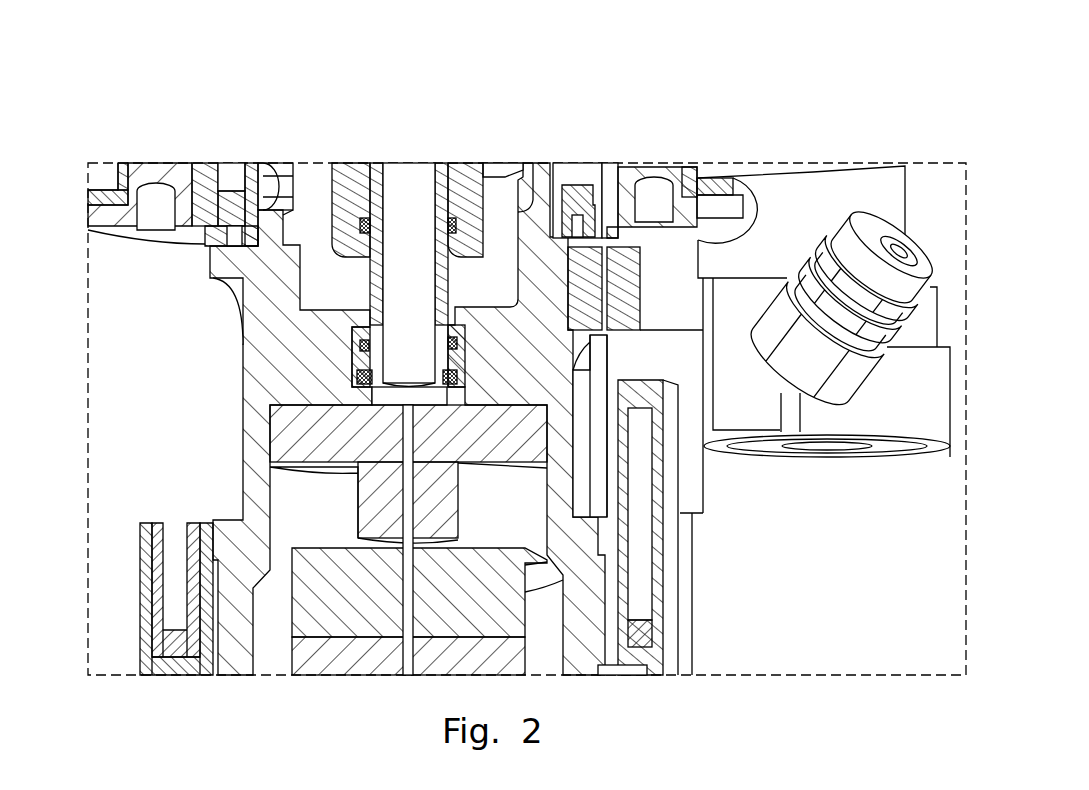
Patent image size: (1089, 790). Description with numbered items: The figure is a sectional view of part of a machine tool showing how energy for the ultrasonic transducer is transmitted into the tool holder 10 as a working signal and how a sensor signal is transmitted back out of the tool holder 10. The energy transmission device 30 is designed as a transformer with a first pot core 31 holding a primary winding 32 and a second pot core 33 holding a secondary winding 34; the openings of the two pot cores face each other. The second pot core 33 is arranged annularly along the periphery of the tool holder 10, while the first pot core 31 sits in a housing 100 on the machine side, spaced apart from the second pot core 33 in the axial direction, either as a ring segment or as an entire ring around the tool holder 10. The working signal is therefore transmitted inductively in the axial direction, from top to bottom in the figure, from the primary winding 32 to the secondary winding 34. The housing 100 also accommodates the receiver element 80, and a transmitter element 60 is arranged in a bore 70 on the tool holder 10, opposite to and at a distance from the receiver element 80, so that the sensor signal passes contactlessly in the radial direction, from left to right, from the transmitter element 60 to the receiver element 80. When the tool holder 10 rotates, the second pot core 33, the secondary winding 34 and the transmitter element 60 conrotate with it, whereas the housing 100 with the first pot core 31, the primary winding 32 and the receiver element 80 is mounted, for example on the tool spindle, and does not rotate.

The tool holder 10 is at (236, 392).
The energy transmission device 30 is at (424, 476).
The first pot core 31 is at (652, 453).
The primary winding 32 is at (648, 487).
The second pot core 33 is at (662, 566).
The secondary winding 34 is at (665, 608).
The transmitter element 60 is at (518, 298).
The bore 70 is at (604, 240).
The receiver element 80 is at (653, 280).
The housing 100 is at (948, 402).